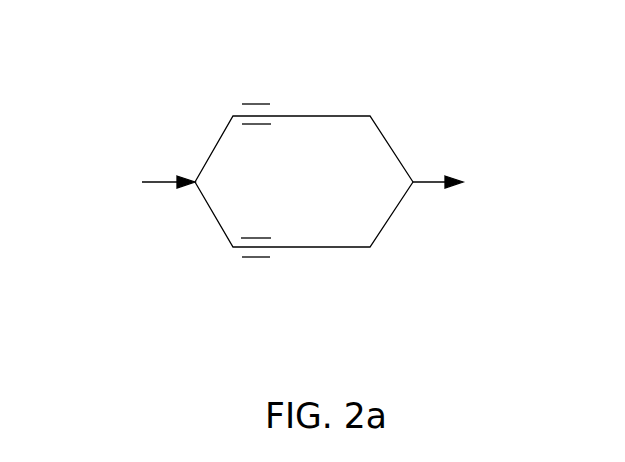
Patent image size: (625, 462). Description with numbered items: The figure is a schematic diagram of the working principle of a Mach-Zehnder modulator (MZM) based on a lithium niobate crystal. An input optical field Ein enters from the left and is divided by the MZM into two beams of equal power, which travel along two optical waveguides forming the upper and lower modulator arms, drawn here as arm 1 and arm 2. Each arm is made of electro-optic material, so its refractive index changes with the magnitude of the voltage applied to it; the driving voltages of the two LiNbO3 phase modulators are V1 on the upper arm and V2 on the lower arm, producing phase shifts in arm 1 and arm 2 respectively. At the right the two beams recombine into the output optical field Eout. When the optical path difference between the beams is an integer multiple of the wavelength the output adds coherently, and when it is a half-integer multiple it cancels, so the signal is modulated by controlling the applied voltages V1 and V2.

The upper arm of Mach-Zehnder modulator with phase shift φ1(t) 1 is at (304, 147).
The lower arm of Mach-Zehnder modulator with phase shift φ2(t) 2 is at (304, 215).
The driving voltage of the first modulator arm V1 is at (255, 104).
The driving voltage of the second modulator arm V2 is at (254, 257).
The input optical field Ein is at (119, 177).
The output optical field Eout is at (490, 177).